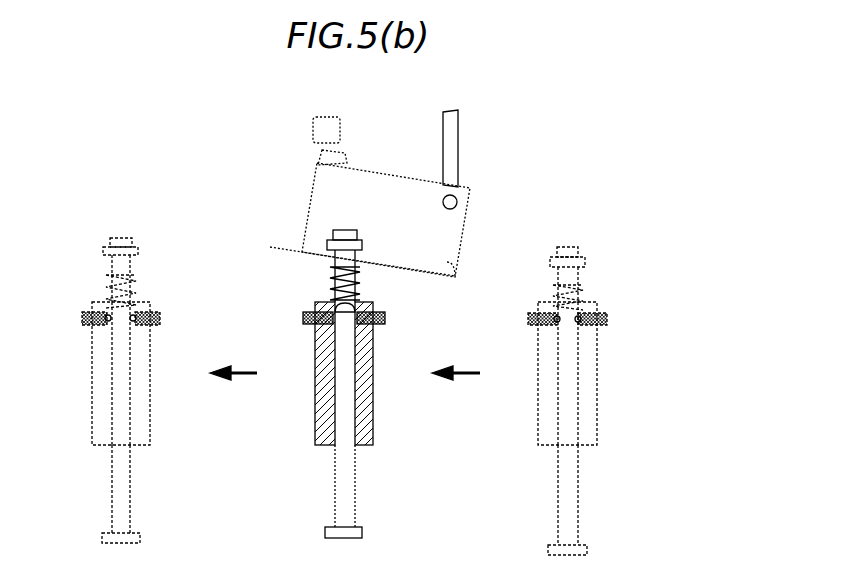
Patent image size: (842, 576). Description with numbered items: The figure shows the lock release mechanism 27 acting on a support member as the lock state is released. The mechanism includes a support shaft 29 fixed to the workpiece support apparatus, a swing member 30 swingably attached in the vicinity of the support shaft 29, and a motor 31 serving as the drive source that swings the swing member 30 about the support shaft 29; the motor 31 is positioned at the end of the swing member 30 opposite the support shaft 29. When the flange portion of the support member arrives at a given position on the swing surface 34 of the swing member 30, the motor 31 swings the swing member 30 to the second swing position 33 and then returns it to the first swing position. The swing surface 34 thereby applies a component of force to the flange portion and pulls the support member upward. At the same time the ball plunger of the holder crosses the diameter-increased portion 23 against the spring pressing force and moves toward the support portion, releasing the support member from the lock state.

The diameter-increased portion 23 is at (343, 308).
The lock release mechanism 27 is at (427, 98).
The support shaft 29 is at (457, 202).
The swing member 30 is at (315, 192).
The motor 31 is at (320, 128).
The second swing position 33 is at (280, 248).
The swing surface 34 is at (455, 264).